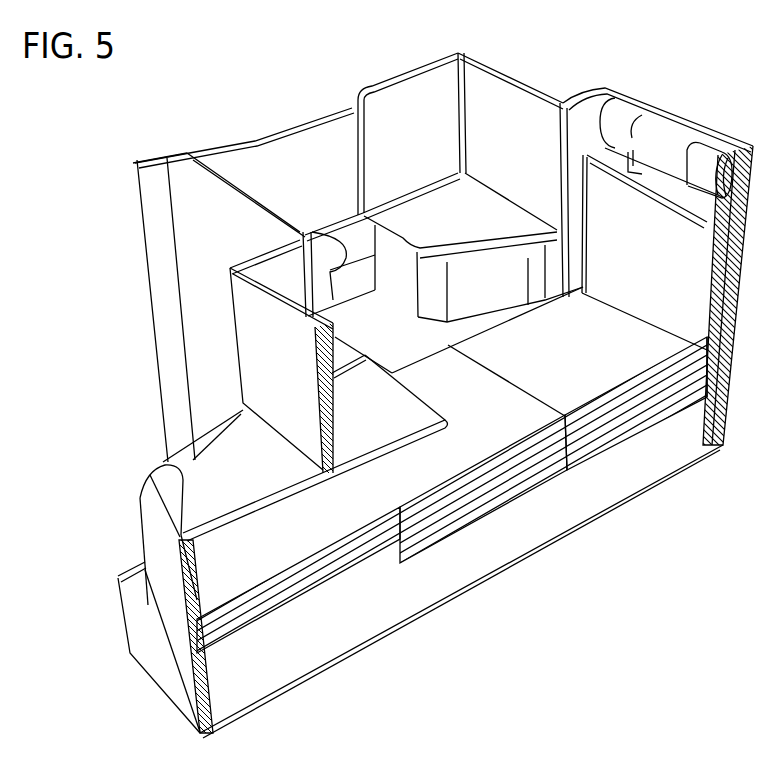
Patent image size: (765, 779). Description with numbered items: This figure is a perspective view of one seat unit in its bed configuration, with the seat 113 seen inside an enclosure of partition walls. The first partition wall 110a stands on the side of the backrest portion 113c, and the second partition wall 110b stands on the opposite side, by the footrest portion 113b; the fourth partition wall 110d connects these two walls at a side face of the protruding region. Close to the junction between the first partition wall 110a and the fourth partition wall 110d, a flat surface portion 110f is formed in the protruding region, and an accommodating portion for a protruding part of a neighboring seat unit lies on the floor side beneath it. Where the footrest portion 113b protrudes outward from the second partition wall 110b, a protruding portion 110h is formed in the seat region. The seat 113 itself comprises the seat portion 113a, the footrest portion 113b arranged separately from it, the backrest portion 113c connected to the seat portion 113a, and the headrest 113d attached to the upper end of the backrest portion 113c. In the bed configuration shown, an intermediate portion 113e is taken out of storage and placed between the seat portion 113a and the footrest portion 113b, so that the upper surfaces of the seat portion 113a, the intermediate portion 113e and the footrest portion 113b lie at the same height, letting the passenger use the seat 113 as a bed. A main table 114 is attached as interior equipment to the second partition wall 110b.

The first partition wall 110a is at (506, 72).
The second partition wall 110b is at (207, 247).
The fourth partition wall 110d is at (394, 104).
The flat surface portion 110f is at (482, 226).
The protruding portion 110h is at (188, 490).
The seat 113 is at (551, 505).
The seat portion 113a is at (627, 427).
The footrest portion 113b is at (308, 580).
The backrest portion 113c is at (660, 248).
The headrest 113d is at (657, 147).
The intermediate portion 113e is at (472, 503).
The main table 114 is at (387, 414).